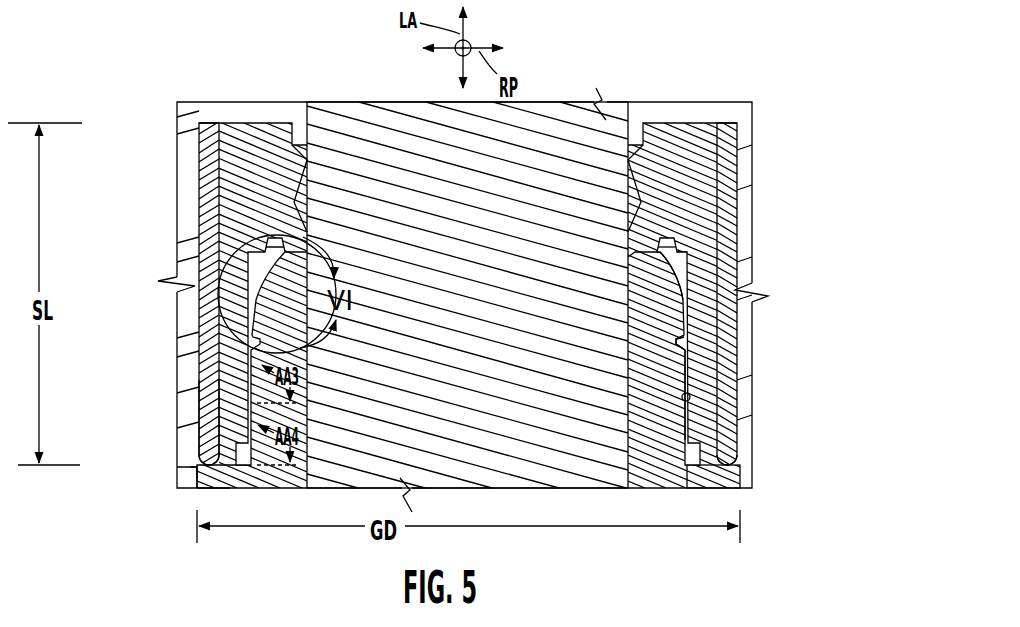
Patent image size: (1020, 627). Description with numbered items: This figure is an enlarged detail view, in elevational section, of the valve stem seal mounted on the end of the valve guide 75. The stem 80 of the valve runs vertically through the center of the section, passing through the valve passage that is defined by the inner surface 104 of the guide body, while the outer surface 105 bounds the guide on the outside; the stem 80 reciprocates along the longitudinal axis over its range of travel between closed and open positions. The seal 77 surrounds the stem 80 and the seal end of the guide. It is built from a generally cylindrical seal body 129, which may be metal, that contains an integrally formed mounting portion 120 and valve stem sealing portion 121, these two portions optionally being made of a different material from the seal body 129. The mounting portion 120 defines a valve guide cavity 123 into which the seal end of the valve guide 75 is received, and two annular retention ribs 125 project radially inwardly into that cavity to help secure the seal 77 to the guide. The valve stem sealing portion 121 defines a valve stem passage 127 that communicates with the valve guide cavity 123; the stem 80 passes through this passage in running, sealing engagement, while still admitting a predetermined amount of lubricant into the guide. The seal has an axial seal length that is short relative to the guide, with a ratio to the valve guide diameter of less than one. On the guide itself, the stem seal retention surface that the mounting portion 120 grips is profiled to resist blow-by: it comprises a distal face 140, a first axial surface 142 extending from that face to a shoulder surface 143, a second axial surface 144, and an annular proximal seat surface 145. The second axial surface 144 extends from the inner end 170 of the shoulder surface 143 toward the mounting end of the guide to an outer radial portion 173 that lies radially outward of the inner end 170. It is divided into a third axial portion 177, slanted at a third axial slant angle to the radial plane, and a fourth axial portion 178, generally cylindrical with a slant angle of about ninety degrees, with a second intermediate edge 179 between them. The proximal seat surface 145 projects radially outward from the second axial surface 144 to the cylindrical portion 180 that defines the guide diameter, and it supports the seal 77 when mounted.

The valve guide 75 is at (208, 488).
The seal 77 is at (198, 194).
The stem 80 is at (445, 292).
The inner surface 104 is at (626, 316).
The outer surface 105 is at (193, 484).
The mounting portion 120 is at (205, 385).
The valve stem sealing portion 121 is at (275, 168).
The valve guide cavity 123 is at (196, 469).
The annular retention rib 125 is at (258, 361).
The valve stem passage 127 is at (307, 198).
The seal body 129 is at (199, 226).
The distal face 140 is at (645, 243).
The first axial surface 142 is at (682, 280).
The shoulder surface 143 is at (687, 346).
The second axial surface 144 is at (692, 384).
The proximal seat surface 145 is at (704, 456).
The inner end 170 is at (683, 346).
The outer radial portion 173 is at (688, 488).
The third axial portion 177 is at (682, 362).
The fourth axial portion 178 is at (683, 428).
The second intermediate edge 179 is at (690, 404).
The cylindrical portion 180 is at (740, 474).